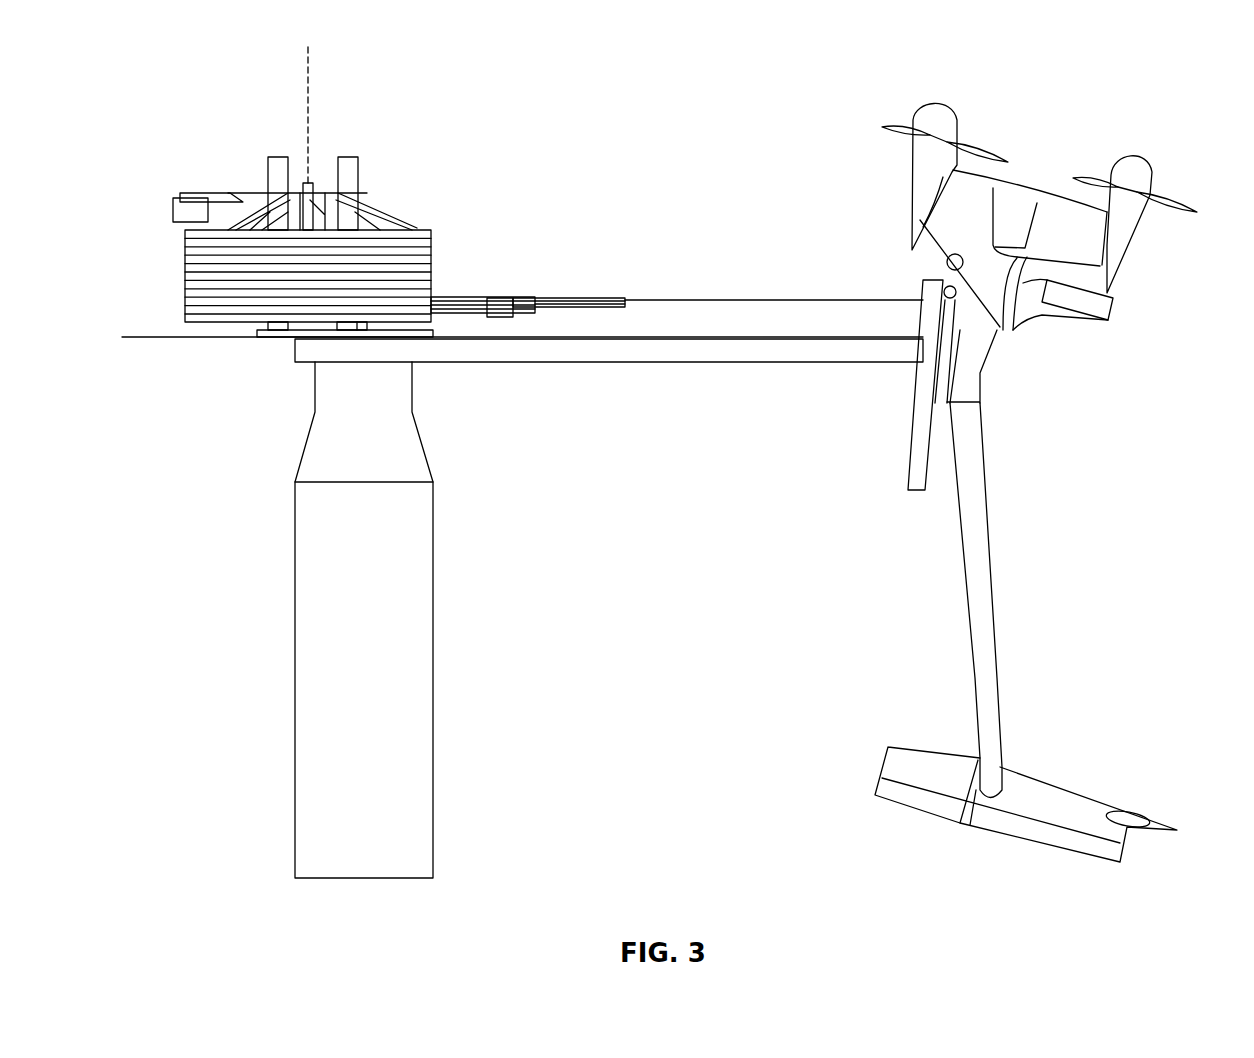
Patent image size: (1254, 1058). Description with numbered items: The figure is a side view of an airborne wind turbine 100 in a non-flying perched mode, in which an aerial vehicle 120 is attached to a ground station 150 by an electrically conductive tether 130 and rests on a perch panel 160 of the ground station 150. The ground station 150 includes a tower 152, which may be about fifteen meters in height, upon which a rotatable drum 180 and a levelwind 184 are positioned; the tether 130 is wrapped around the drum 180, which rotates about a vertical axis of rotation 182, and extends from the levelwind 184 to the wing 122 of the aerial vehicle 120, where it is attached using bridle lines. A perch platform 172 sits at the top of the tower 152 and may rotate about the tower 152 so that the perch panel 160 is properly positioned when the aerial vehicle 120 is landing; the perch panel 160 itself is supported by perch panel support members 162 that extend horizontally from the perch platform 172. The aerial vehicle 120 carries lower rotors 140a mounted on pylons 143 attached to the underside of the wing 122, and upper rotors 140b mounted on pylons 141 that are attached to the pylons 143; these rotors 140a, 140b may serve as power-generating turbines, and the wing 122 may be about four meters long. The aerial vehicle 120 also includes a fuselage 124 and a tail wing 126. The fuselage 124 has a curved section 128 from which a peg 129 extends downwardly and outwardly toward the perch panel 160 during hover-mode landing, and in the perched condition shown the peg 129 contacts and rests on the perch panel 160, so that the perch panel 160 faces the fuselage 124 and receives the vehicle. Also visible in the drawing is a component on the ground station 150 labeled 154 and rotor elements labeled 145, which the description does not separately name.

The airborne wind turbine 100 is at (672, 86).
The aerial vehicle 120 is at (1166, 82).
The wing 122 is at (1037, 315).
The fuselage 124 is at (985, 602).
The tail wing 126 is at (1032, 805).
The curved section 128 is at (973, 377).
The peg 129 is at (942, 393).
The tether 130 is at (768, 292).
The lower rotors 140a is at (948, 120).
The upper rotors 140b is at (1143, 170).
The pylons 141 is at (1087, 247).
The pylons 143 is at (953, 220).
The propeller 145 is at (965, 148).
The ground station 150 is at (258, 188).
The tower 152 is at (328, 738).
The motor 154 is at (175, 205).
The perch panel 160 is at (912, 447).
The perch panel support members 162 is at (640, 352).
The perch platform 172 is at (275, 349).
The rotatable drum 180 is at (185, 290).
The axis of rotation 182 is at (305, 88).
The levelwind 184 is at (556, 297).